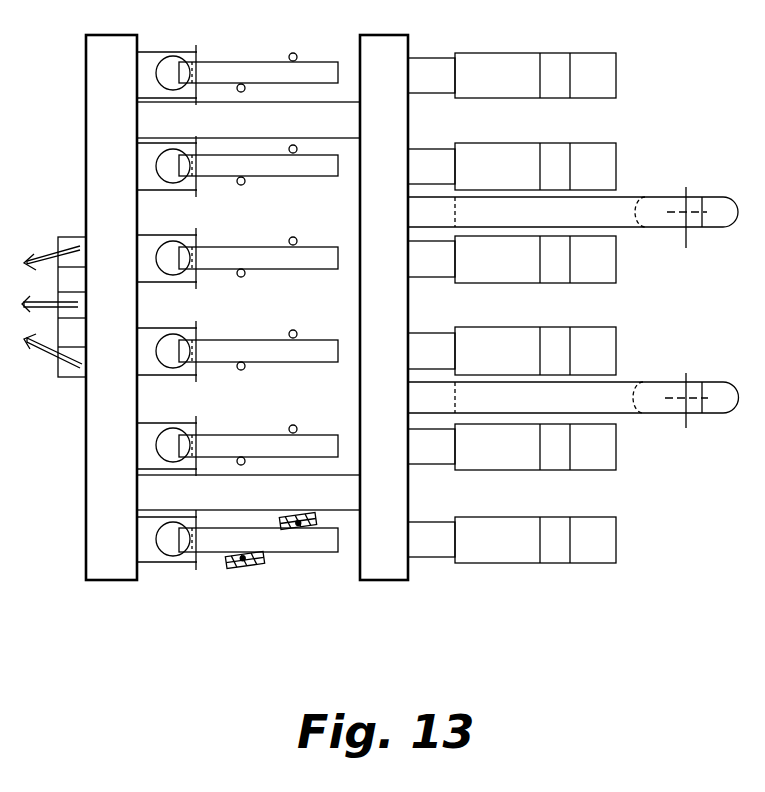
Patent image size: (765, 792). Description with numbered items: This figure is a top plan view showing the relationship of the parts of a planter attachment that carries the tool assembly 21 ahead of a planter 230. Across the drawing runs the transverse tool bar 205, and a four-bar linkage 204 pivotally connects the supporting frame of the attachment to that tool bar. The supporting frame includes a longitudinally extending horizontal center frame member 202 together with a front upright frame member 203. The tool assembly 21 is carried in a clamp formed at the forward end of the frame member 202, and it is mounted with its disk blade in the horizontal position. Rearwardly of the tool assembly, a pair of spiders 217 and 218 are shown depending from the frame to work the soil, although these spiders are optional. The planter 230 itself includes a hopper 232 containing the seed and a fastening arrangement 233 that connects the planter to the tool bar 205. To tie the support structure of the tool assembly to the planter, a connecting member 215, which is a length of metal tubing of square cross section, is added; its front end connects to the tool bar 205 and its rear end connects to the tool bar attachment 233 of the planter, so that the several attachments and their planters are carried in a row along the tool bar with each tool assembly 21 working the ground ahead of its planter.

The transverse tool bar 205 is at (87, 335).
The four-bar linkage 204 is at (153, 567).
The tool assembly 21 is at (167, 562).
The horizontal center frame member 202 is at (215, 547).
The front upright frame member 203 is at (203, 552).
The spider 217 is at (258, 567).
The spider 218 is at (306, 528).
The connecting member 215 is at (342, 490).
The fastening arrangement 233 is at (382, 572).
The hopper 232 is at (498, 557).
The planter 230 is at (613, 563).